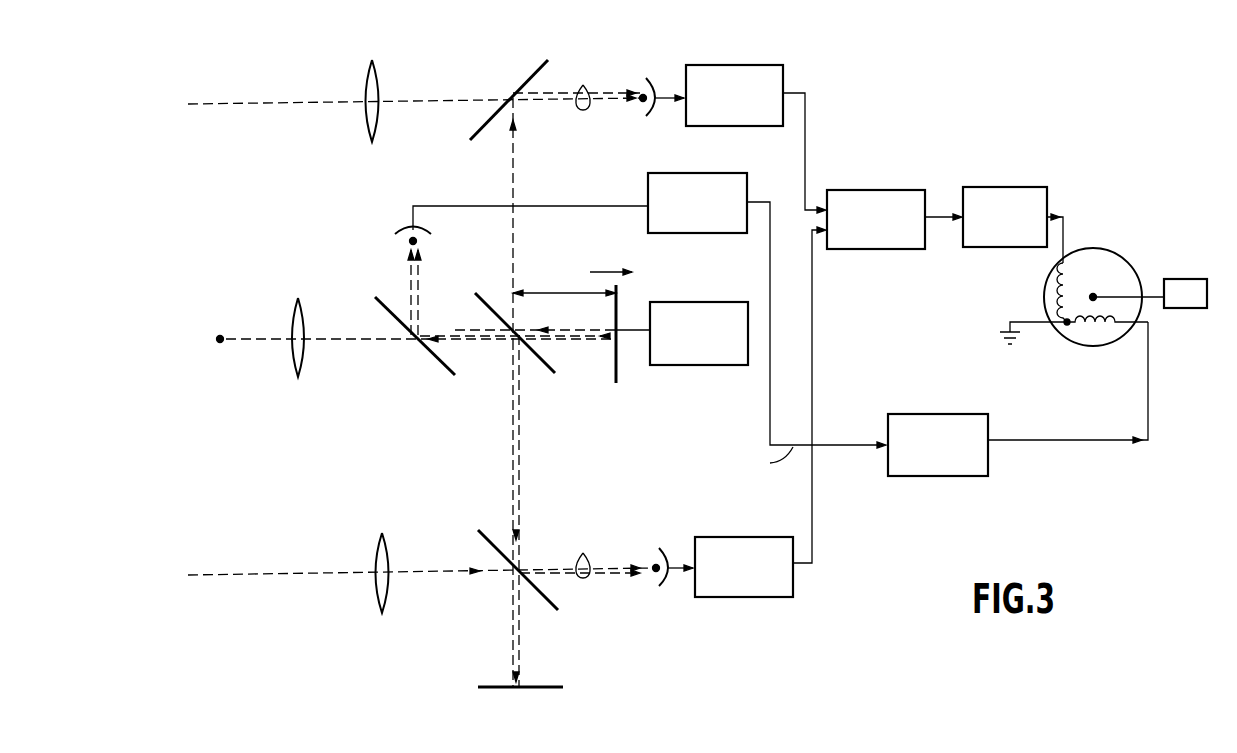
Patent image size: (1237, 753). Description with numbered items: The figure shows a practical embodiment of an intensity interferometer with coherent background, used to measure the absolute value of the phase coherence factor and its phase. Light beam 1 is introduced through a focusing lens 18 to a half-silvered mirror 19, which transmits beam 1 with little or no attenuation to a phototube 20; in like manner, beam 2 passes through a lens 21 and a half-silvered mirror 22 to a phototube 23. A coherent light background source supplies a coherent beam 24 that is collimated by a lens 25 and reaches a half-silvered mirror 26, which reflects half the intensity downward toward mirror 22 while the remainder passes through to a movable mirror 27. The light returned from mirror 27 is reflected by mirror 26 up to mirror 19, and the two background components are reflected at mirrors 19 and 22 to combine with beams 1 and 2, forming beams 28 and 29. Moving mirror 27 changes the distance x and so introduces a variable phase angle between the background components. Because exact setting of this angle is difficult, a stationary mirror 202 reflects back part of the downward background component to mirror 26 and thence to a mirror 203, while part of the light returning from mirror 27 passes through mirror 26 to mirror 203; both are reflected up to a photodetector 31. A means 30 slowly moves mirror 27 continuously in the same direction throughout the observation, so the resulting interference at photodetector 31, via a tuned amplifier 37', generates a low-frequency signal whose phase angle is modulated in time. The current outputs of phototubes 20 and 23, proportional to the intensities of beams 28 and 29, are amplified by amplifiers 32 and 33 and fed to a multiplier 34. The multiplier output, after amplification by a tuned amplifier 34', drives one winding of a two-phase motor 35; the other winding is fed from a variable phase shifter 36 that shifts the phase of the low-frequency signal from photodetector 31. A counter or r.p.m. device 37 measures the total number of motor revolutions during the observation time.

The light beam 1 is at (228, 104).
The light beam 2 is at (307, 573).
The focusing lens 18 is at (378, 70).
The half-silvered mirror 19 is at (540, 64).
The phototube 20 is at (665, 64).
The lens 21 is at (389, 553).
The half-silvered mirror 22 is at (556, 612).
The phototube 23 is at (668, 588).
The coherent beam 24 is at (257, 340).
The lens 25 is at (303, 306).
The half-silvered mirror 26 is at (548, 368).
The movable mirror 27 is at (618, 383).
The beam 28 is at (583, 84).
The beam 29 is at (583, 552).
The mirror moving means 30 is at (727, 302).
The photodetector 31 is at (400, 233).
The amplifier 32 is at (736, 65).
The amplifier 33 is at (770, 598).
The multiplier 34 is at (894, 203).
The tuned amplifier 34' is at (1012, 208).
The two-phase motor 35 is at (1140, 281).
The variable phase shifter 36 is at (988, 460).
The counter 37 is at (1161, 283).
The tuned amplifier 37' is at (649, 304).
The stationary mirror 202 is at (553, 692).
The mirror 203 is at (432, 358).